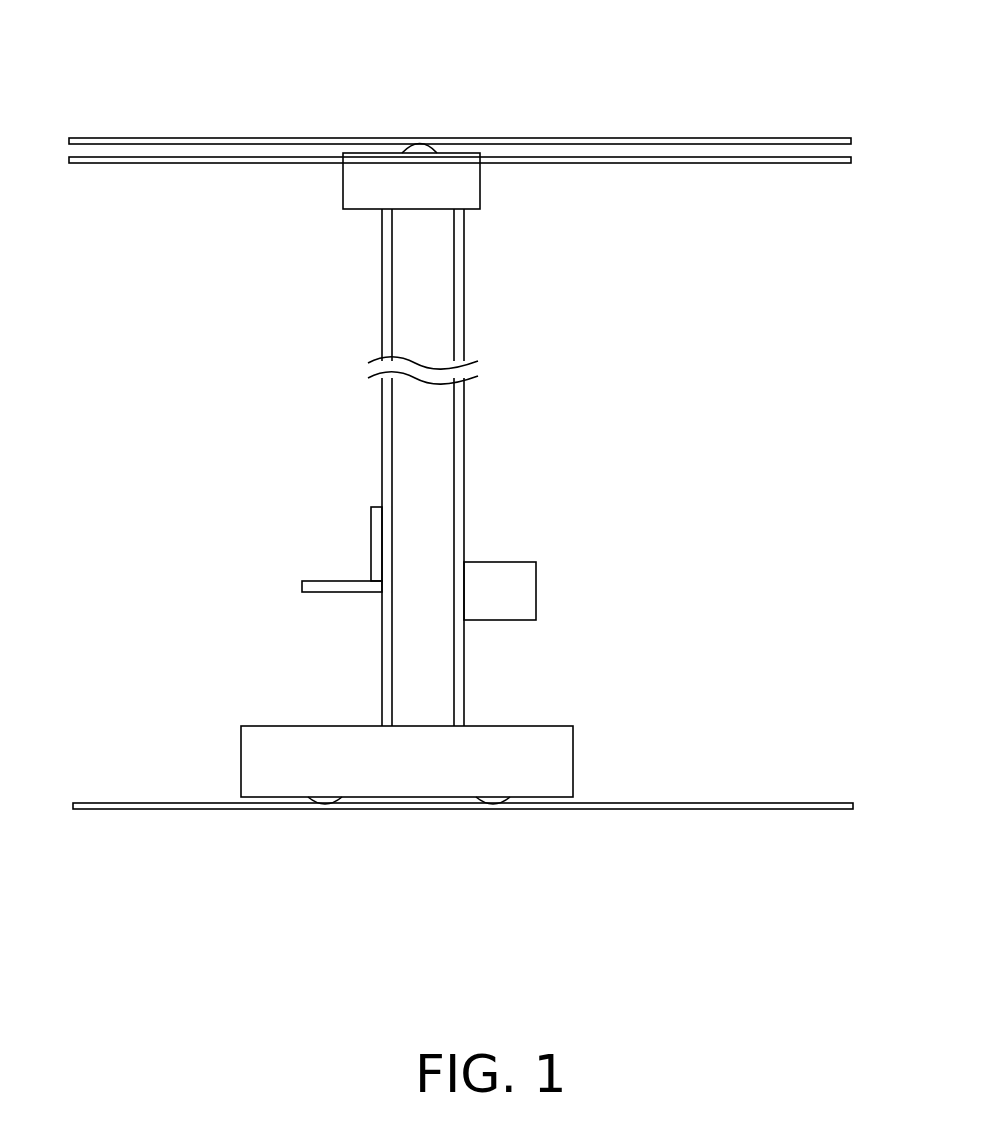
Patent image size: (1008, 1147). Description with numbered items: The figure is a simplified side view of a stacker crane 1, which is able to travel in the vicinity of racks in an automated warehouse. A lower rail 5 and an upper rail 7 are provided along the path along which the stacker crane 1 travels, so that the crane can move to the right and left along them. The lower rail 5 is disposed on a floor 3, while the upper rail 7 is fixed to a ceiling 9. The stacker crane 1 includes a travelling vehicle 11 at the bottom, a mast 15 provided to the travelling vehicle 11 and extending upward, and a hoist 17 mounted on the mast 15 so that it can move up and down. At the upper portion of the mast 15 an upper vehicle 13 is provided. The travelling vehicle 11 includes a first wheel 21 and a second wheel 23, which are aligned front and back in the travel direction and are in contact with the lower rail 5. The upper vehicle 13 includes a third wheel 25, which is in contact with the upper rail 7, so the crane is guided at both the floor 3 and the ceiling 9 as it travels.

The stacker crane 1 is at (616, 398).
The floor 3 is at (448, 930).
The lower rail 5 is at (802, 803).
The upper rail 7 is at (743, 144).
The ceiling 9 is at (445, 26).
The travelling vehicle 11 is at (555, 740).
The upper vehicle 13 is at (445, 172).
The mast 15 is at (473, 430).
The hoist 17 is at (320, 522).
The first wheel 21 is at (326, 804).
The second wheel 23 is at (493, 804).
The third wheel 25 is at (418, 149).